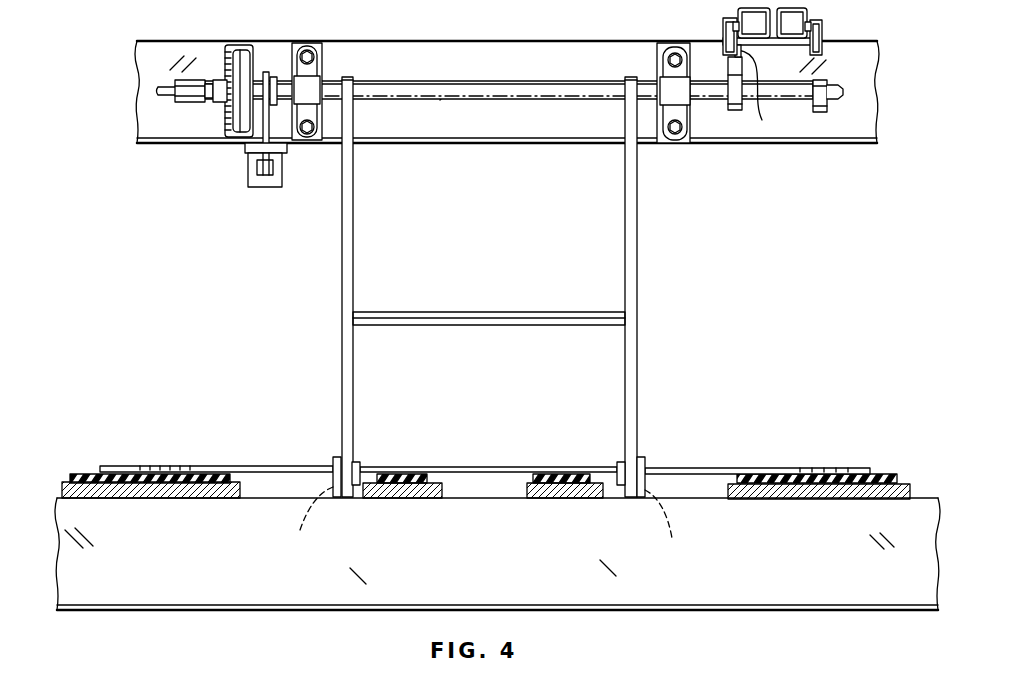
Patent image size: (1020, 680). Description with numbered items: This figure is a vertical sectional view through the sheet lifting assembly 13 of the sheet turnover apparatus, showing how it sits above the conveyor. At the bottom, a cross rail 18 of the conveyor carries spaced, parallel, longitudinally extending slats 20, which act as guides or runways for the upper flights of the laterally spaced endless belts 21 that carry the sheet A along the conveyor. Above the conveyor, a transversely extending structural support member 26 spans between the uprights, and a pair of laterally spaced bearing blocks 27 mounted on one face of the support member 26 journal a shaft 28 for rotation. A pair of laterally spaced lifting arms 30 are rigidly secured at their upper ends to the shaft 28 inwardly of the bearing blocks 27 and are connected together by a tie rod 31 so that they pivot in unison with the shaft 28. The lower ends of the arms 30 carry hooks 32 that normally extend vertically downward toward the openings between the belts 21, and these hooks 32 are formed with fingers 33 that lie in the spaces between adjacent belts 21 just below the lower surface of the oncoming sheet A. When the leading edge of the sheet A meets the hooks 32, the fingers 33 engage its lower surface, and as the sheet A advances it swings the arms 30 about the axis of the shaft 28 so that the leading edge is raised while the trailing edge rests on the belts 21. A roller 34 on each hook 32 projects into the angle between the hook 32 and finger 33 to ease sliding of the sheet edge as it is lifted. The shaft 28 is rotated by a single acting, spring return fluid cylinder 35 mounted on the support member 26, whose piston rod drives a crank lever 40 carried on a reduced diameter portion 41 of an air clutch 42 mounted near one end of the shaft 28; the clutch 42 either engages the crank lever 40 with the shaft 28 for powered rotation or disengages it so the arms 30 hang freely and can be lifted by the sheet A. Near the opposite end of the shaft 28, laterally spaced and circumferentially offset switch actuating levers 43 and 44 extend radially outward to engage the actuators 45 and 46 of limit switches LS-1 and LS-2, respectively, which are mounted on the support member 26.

The lifting assembly 13 is at (133, 21).
The cross rails 18 is at (210, 602).
The slats 20 is at (155, 497).
The endless belts 21 is at (80, 472).
The sheet A is at (205, 466).
The structural support member 26 is at (420, 50).
The bearing blocks 27 is at (310, 75).
The shaft 28 is at (510, 90).
The lifting arms 30 is at (348, 230).
The tie rod 31 is at (490, 318).
The hooks 32 is at (336, 458).
The fingers 33 is at (483, 526).
The roller 34 is at (360, 465).
The fluid cylinder 35 is at (255, 186).
The crank lever 40 is at (262, 120).
The reduced diameter portion 41 is at (260, 72).
The air clutch 42 is at (235, 50).
The switch actuating lever 43 is at (820, 108).
The switch actuating lever 44 is at (728, 68).
The actuator 45 is at (862, 50).
The actuator 46 is at (738, 52).
The limit switch LS-1 is at (800, 10).
The limit switch LS-2 is at (740, 12).